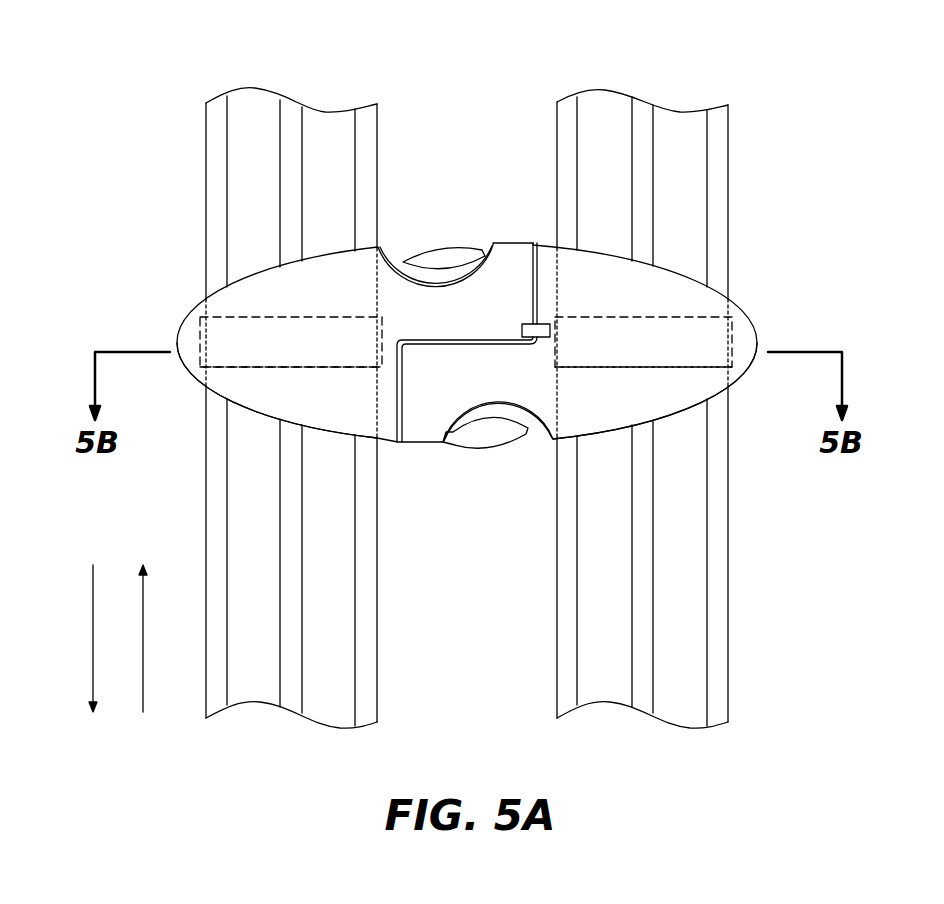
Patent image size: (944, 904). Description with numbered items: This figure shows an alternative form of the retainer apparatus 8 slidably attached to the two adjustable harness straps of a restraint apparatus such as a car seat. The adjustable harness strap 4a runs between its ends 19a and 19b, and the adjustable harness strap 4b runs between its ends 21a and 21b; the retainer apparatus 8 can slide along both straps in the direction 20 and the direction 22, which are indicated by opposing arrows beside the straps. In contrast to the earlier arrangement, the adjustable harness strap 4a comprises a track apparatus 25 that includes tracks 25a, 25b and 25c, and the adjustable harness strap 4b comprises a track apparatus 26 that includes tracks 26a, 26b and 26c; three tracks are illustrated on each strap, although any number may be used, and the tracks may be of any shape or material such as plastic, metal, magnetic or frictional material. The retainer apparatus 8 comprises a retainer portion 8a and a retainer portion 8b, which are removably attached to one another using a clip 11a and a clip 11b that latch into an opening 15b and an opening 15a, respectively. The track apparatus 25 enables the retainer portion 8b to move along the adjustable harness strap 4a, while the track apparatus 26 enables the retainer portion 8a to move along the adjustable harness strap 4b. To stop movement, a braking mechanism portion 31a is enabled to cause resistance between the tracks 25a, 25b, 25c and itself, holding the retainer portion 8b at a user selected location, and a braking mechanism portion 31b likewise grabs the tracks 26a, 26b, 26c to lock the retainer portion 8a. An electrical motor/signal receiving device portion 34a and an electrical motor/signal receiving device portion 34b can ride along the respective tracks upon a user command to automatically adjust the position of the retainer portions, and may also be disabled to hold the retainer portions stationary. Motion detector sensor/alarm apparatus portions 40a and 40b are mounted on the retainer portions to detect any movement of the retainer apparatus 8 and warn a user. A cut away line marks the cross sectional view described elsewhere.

The track apparatus 25 is at (290, 404).
The track apparatus 26 is at (642, 411).
The end of harness strap 4a 19a is at (320, 110).
The end of harness strap 4a 19b is at (315, 716).
The end of harness strap 4b 21a is at (677, 112).
The end of harness strap 4b 21b is at (672, 720).
The track 25a is at (206, 131).
The track 25b is at (378, 142).
The track 25c is at (280, 177).
The track 26a is at (557, 130).
The track 26b is at (728, 133).
The track 26c is at (632, 223).
The adjustable harness strap 4a is at (344, 195).
The adjustable harness strap 4b is at (694, 195).
The retainer apparatus 8 is at (525, 213).
The retainer portion 8a is at (602, 415).
The retainer portion 8b is at (255, 403).
The opening 15a is at (394, 242).
The opening 15b is at (537, 440).
The clip 11a is at (483, 447).
The clip 11b is at (433, 258).
The electrical motor/signal receiving device portion 34a is at (262, 306).
The electrical motor/signal receiving device portion 34b is at (598, 306).
The braking mechanism portion 31a is at (280, 370).
The braking mechanism portion 31b is at (616, 372).
The motion detector sensor/alarm apparatus portion 40a is at (522, 332).
The motion detector sensor/alarm apparatus portion 40b is at (542, 345).
The direction 20 is at (92, 597).
The direction 22 is at (141, 597).